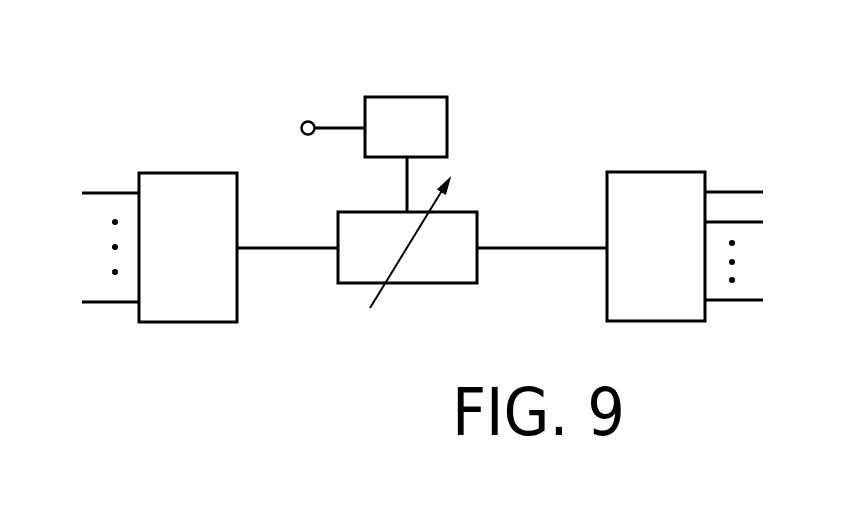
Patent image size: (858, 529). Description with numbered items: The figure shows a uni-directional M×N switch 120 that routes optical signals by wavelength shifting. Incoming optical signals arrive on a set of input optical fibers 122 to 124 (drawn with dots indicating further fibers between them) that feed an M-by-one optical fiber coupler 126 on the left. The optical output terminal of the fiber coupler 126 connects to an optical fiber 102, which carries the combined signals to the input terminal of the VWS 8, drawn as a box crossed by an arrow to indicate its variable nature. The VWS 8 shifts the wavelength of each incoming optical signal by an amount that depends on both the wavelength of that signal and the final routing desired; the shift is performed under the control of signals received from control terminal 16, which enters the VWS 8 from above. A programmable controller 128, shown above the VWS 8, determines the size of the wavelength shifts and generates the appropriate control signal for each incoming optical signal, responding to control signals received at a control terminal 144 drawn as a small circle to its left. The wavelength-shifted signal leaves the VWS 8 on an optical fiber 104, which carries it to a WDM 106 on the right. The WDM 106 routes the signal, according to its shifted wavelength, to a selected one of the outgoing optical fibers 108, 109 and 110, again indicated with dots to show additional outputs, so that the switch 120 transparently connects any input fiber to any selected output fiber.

The M×N switch 120 is at (203, 83).
The optical fiber 122 is at (107, 185).
The optical fiber 124 is at (108, 305).
The M×1 optical fiber coupler 126 is at (217, 295).
The optical fiber 102 is at (272, 250).
The VWS 8 is at (422, 285).
The control terminal 16 is at (407, 182).
The programmable controller 128 is at (427, 142).
The control terminal 144 is at (303, 120).
The optical fiber 104 is at (543, 247).
The WDM 106 is at (645, 172).
The output optical fiber 108 is at (740, 192).
The output optical fiber 109 is at (748, 220).
The output optical fiber 110 is at (738, 303).